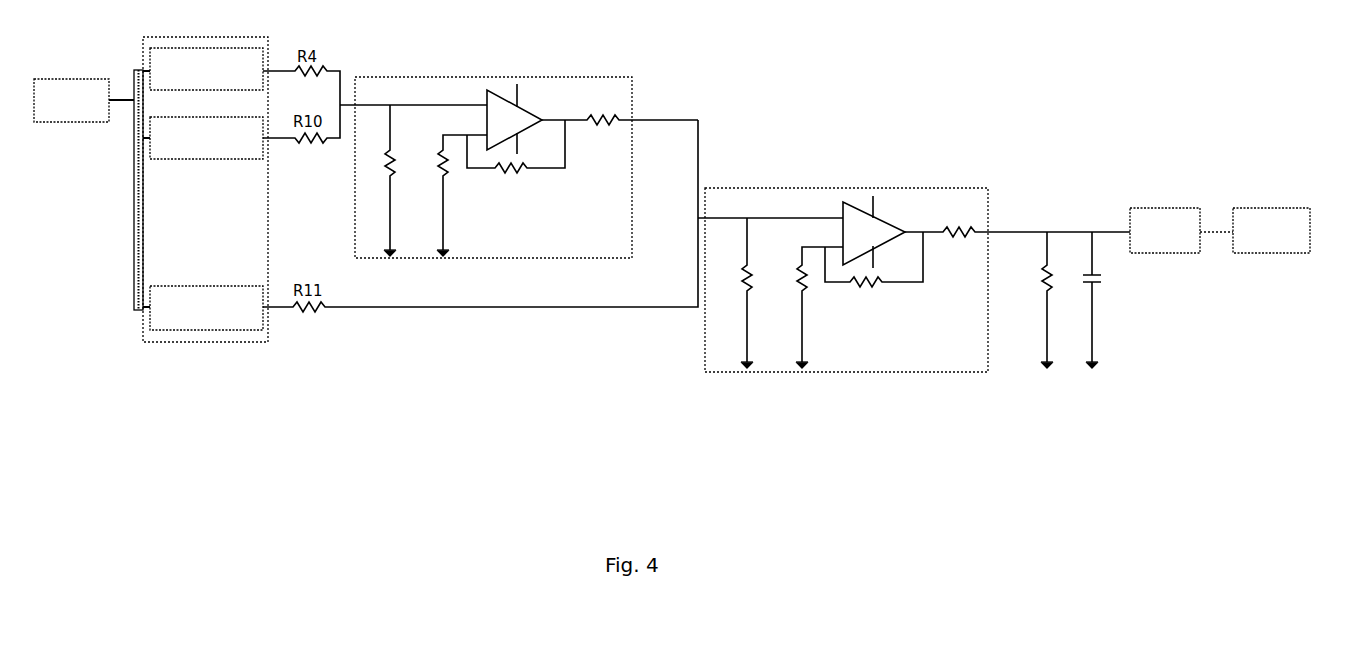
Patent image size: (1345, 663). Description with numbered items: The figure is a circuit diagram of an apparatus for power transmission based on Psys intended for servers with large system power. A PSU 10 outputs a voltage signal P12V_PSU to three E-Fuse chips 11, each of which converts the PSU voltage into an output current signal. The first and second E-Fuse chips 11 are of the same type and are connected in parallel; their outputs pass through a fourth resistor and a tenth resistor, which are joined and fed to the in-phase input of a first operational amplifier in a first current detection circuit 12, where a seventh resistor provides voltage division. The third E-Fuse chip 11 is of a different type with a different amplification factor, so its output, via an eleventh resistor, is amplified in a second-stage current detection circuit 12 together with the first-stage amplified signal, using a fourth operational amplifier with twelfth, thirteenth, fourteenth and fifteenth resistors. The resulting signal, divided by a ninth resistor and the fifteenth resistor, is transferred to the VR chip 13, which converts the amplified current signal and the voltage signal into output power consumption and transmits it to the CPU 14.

The PSU 10 is at (78, 79).
The E-Fuse chip 11 is at (208, 37).
The current detection circuit 12 is at (497, 77).
The VR chip 13 is at (1167, 212).
The CPU 14 is at (1273, 212).